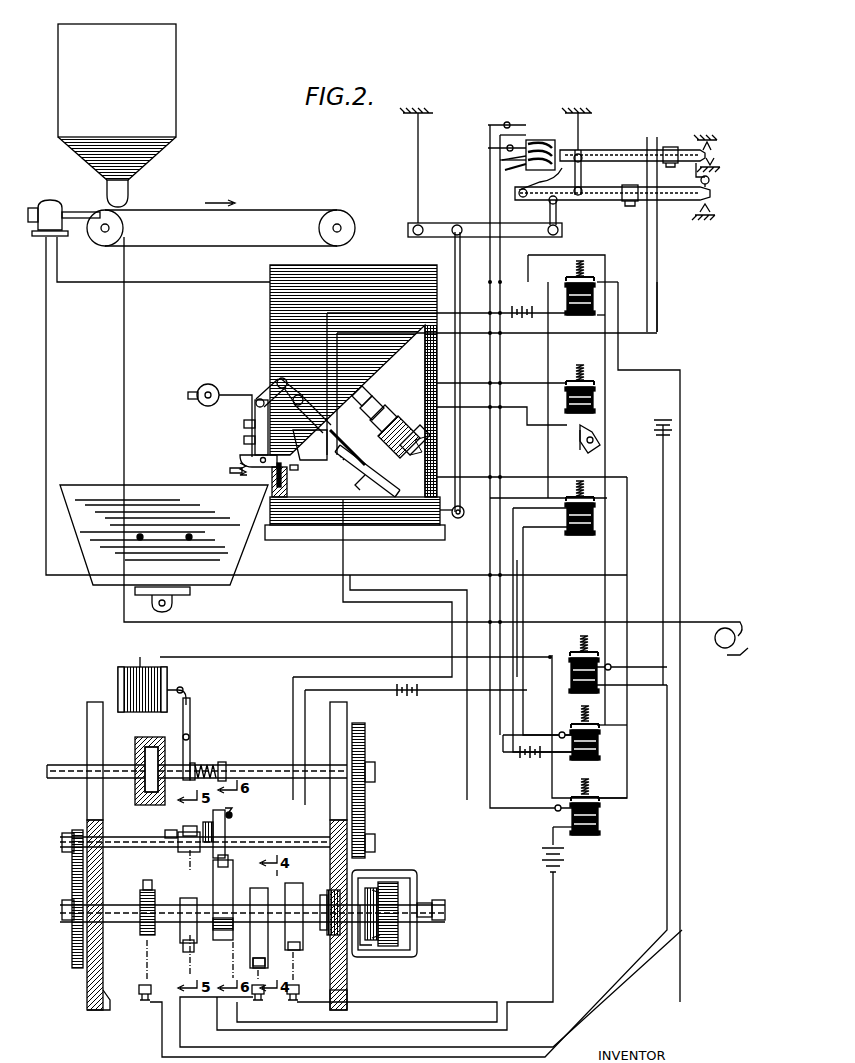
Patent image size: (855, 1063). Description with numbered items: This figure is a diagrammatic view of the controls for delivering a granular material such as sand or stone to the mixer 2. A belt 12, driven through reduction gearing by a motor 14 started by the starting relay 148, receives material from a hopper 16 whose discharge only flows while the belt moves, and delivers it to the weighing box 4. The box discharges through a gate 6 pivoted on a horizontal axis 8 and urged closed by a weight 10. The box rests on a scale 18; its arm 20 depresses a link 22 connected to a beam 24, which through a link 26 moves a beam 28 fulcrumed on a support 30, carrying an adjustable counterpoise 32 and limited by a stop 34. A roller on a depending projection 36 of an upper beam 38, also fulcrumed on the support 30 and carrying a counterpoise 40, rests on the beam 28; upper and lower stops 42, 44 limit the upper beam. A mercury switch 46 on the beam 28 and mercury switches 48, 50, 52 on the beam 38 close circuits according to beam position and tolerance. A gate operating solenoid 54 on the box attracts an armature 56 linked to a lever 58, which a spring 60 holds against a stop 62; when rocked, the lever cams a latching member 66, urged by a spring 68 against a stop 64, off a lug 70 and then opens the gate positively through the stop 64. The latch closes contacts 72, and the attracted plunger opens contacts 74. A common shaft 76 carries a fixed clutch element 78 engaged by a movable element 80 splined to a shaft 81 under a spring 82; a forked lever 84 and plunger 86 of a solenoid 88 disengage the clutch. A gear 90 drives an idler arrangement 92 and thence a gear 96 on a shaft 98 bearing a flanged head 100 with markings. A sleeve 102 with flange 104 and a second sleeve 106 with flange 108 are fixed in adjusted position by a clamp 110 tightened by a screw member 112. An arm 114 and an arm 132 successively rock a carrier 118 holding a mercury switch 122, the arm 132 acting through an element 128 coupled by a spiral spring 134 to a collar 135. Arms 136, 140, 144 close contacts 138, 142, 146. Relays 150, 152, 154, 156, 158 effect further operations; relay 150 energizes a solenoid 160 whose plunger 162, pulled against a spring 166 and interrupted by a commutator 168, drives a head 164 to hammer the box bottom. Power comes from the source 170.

The mixer 2 is at (110, 490).
The weighing box 4 is at (270, 320).
The gate 6 is at (255, 420).
The horizontal axis 8 is at (265, 395).
The weight 10 is at (208, 384).
The belt 12 is at (270, 210).
The motor 14 is at (40, 200).
The hopper 16 is at (172, 76).
The scale 18 is at (398, 512).
The arm 20 is at (464, 517).
The link 22 is at (462, 362).
The beam 24 is at (480, 223).
The link 26 is at (560, 215).
The beam 28 is at (675, 200).
The support 30 is at (590, 140).
The counterpoise 32 is at (630, 206).
The stop 34 is at (712, 208).
The depending projection 36 is at (710, 180).
The upper beam 38 is at (610, 150).
The counterpoise 40 is at (670, 147).
The upper stop 42 is at (712, 140).
The lower stop 44 is at (715, 160).
The mercury switch 46 is at (530, 198).
The mercury switch 48 is at (490, 168).
The mercury switch 50 is at (490, 150).
The mercury switch 52 is at (540, 140).
The gate operating solenoid 54 is at (352, 462).
The armature 56 is at (372, 390).
The lever 58 is at (244, 425).
The spring 60 is at (244, 441).
The stop 62 is at (310, 445).
The stop 64 is at (242, 458).
The latching member 66 is at (230, 470).
The spring 68 is at (241, 474).
The lug 70 is at (283, 470).
The contacts 72 is at (296, 470).
The contacts 74 is at (362, 480).
The shaft 76 is at (60, 765).
The fixed clutch element 78 is at (150, 737).
The movable clutch element 80 is at (158, 750).
The shaft 81 is at (250, 765).
The spring 82 is at (212, 763).
The forked lever 84 is at (190, 748).
The plunger 86 is at (186, 692).
The solenoid 88 is at (143, 667).
The gear 90 is at (365, 745).
The intermediate idler arrangement 92 is at (365, 830).
The gear 96 is at (72, 950).
The shaft 98 is at (122, 922).
The flanged head 100 is at (388, 882).
The sleeve 102 is at (182, 935).
The flange 104 is at (372, 940).
The second sleeve 106 is at (248, 895).
The flange 108 is at (362, 945).
The clamp 110 is at (417, 937).
The screw member 112 is at (438, 900).
The arm 114 is at (213, 880).
The carrier 118 is at (225, 828).
The mercury switch 122 is at (232, 814).
The element 128 is at (185, 852).
The arm 132 is at (194, 945).
The spiral spring 134 is at (180, 826).
The collar 135 is at (160, 830).
The arm 136 is at (143, 882).
The contacts 138 is at (139, 990).
The arm 140 is at (265, 955).
The contacts 142 is at (264, 994).
The arm 144 is at (303, 940).
The contacts 146 is at (299, 990).
The starting relay 148 is at (593, 300).
The relay 150 is at (593, 400).
The relay 152 is at (593, 520).
The relay 154 is at (595, 690).
The relay 156 is at (598, 748).
The relay 158 is at (598, 818).
The solenoid 160 is at (418, 418).
The plunger 162 is at (395, 410).
The head 164 is at (392, 393).
The spring 166 is at (428, 440).
The commutator 168 is at (604, 428).
The source of power 170 is at (735, 625).